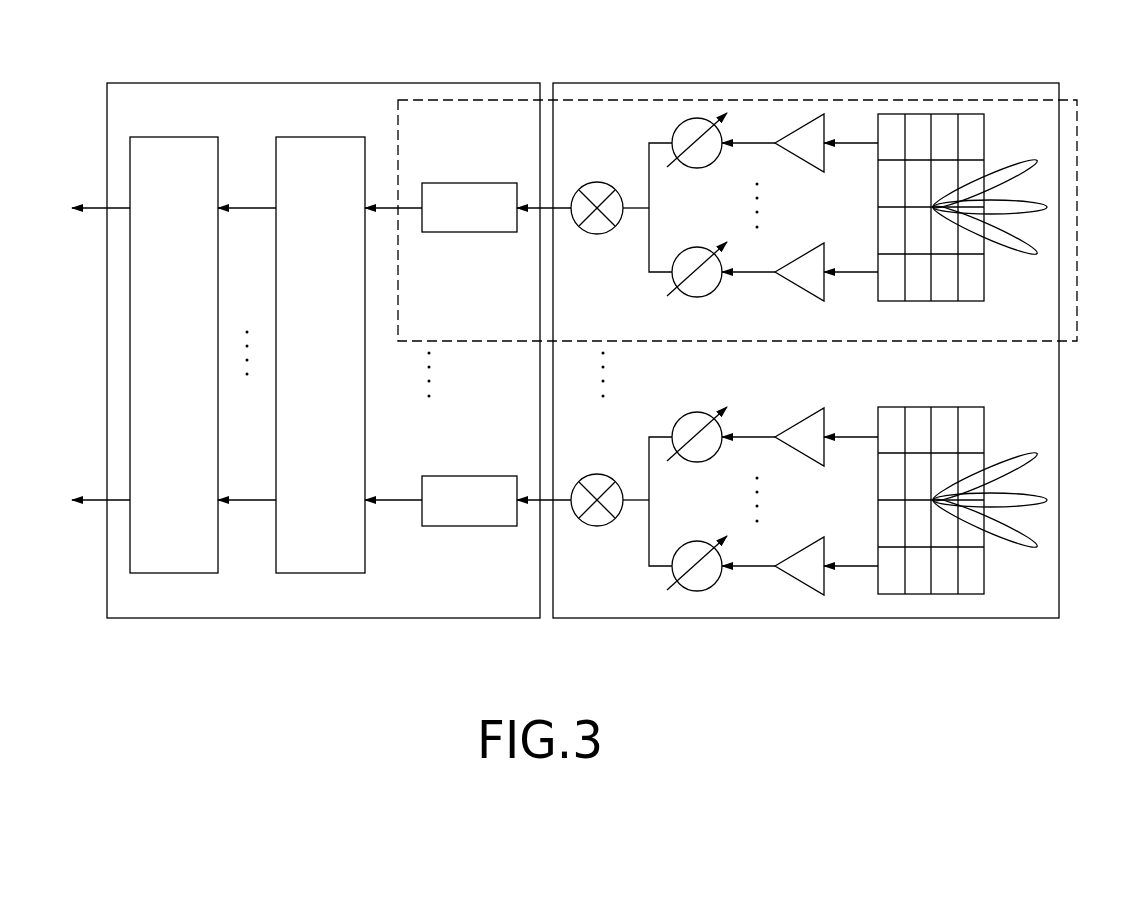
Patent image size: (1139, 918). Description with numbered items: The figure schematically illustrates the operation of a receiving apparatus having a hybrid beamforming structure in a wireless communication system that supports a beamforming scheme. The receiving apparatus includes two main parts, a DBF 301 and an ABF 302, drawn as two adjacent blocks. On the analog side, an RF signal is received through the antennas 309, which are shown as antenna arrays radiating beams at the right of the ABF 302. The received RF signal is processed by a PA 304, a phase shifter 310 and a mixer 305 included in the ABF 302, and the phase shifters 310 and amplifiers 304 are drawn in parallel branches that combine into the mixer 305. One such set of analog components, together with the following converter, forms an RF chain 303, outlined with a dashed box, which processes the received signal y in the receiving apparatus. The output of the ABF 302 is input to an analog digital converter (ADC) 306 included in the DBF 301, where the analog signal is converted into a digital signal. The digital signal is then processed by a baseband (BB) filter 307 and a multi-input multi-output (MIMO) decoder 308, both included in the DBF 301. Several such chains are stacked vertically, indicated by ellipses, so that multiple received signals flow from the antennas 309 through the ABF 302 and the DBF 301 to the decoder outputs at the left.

The DBF 301 is at (320, 83).
The ABF 302 is at (803, 83).
The RF chain 303 is at (1077, 216).
The PA 304 is at (799, 254).
The mixer 305 is at (597, 182).
The analog digital converter (ADC) 306 is at (467, 183).
The baseband (BB) filter 307 is at (320, 137).
The multi-input multi-output (MIMO) decoder 308 is at (174, 137).
The antennas 309 is at (928, 114).
The phase shifter 310 is at (697, 118).